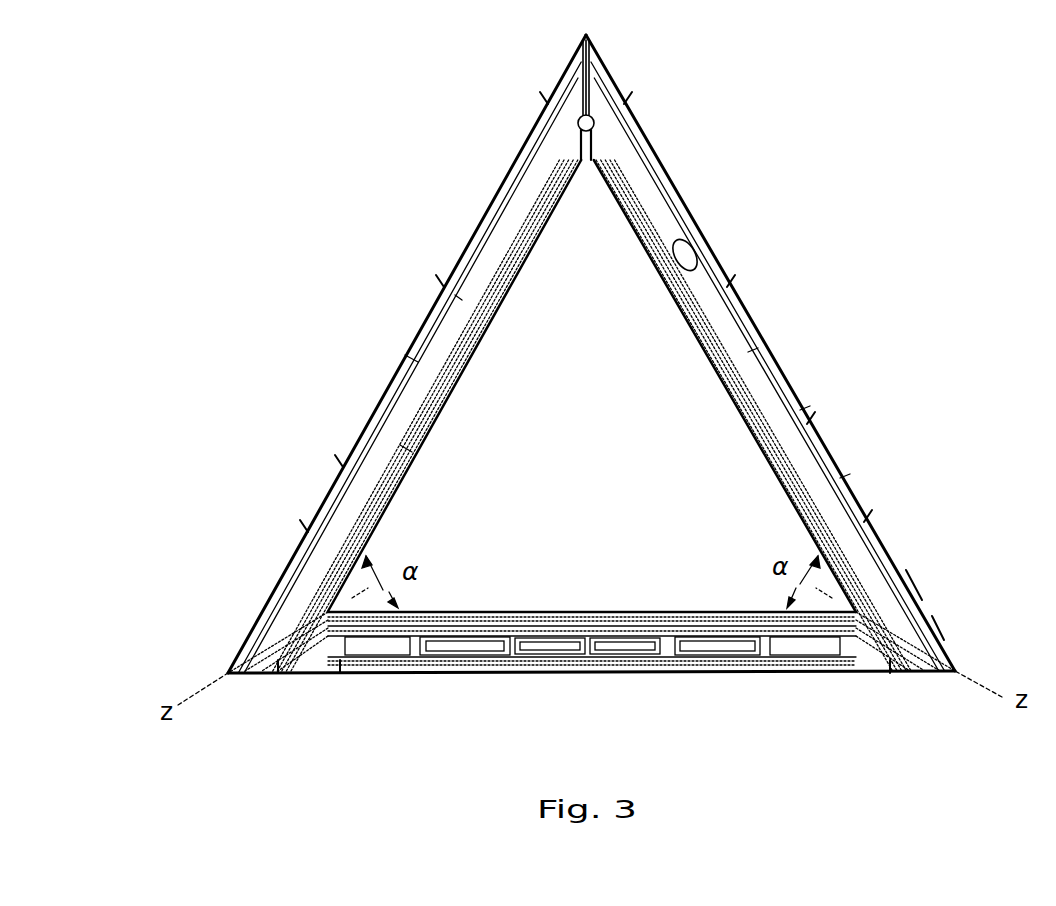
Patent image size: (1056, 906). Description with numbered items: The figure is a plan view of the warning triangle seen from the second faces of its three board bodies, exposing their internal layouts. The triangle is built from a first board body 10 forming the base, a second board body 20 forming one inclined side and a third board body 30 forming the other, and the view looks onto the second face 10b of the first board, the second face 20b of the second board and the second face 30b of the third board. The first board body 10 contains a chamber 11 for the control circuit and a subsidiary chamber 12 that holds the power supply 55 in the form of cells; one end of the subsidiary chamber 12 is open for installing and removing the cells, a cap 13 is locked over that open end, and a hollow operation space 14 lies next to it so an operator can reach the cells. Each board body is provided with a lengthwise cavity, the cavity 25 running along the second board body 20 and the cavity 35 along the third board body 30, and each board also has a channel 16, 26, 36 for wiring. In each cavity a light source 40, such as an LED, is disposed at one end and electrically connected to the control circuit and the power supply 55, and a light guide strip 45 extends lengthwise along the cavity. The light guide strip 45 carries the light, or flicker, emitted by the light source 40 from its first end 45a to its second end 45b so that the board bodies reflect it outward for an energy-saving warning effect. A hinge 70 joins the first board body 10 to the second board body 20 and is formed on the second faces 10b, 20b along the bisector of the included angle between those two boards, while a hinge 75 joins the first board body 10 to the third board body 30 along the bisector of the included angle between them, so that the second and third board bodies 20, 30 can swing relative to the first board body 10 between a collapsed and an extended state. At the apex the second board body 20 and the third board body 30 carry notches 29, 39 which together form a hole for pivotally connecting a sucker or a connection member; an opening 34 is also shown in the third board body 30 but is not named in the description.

The first board body 10 is at (660, 710).
The second face 10b is at (798, 650).
The chamber 11 is at (460, 676).
The subsidiary chamber 12 is at (597, 700).
The cap 13 is at (678, 676).
The hollow operation space 14 is at (738, 650).
The channel 16 is at (378, 676).
The second board body 20 is at (412, 300).
The second face 20b is at (412, 360).
The cavity 25 is at (475, 232).
The channel 26 is at (375, 455).
The notch 29 is at (578, 122).
The third board body 30 is at (712, 190).
The second face 30b is at (750, 357).
The hole 34 is at (698, 258).
The cavity 35 is at (720, 445).
The channel 36 is at (822, 470).
The notch 39 is at (598, 108).
The light source 40 is at (596, 112).
The light guide strip 45 is at (668, 165).
The first end 45a is at (545, 185).
The second end 45b is at (322, 530).
The power supply 55 is at (555, 652).
The hinge 70 is at (278, 676).
The hinge 75 is at (880, 640).